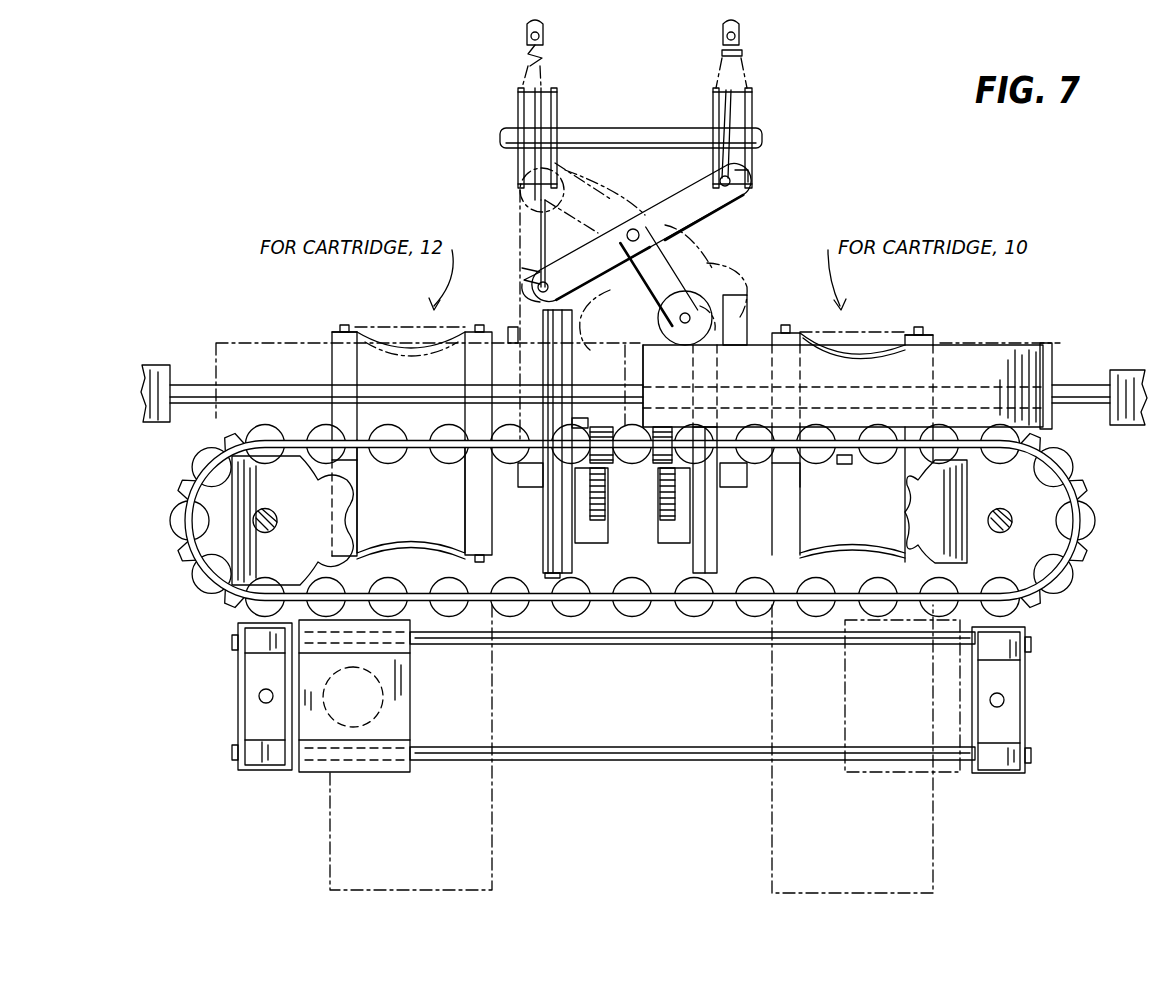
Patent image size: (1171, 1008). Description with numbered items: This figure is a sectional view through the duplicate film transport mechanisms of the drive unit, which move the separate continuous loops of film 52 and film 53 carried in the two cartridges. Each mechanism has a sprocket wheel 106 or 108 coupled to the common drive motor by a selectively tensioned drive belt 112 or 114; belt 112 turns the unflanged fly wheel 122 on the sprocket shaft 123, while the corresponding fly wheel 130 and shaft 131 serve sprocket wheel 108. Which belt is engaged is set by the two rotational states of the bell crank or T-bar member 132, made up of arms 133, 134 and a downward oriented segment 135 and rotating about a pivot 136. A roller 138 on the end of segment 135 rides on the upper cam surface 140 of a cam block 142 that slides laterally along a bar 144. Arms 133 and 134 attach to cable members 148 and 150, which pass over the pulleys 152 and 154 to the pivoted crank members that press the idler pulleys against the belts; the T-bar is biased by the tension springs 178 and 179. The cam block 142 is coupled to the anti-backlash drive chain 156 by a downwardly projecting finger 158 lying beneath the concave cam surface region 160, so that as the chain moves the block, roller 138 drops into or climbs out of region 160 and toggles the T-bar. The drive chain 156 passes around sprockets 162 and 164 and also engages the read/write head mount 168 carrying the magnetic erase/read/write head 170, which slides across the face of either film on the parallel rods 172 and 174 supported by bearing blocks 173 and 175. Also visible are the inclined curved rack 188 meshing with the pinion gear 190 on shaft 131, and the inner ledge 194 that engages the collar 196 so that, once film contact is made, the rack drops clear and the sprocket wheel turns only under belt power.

The film 52 is at (934, 828).
The film 53 is at (494, 830).
The sprocket wheel 106 is at (332, 332).
The sprocket wheel 108 is at (931, 335).
The drive belt 112 is at (548, 516).
The drive belt 114 is at (712, 540).
The fly wheel 122 is at (556, 549).
The sprocket shaft 123 is at (510, 460).
The fly wheel 130 is at (717, 506).
The shaft 131 is at (776, 466).
The T-bar member 132 is at (612, 205).
The arm 133 is at (590, 252).
The arm 134 is at (705, 206).
The downward oriented segment 135 is at (650, 293).
The pivot 136 is at (645, 236).
The roller 138 is at (725, 275).
The upper cam surface 140 is at (965, 345).
The cam block 142 is at (1028, 343).
The bar 144 is at (1083, 385).
The cable member 148 is at (557, 110).
The cable member 150 is at (722, 116).
The pulley 152 is at (518, 107).
The pulley 154 is at (752, 114).
The drive chain 156 is at (430, 448).
The finger 158 is at (843, 464).
The concave cam surface region 160 is at (852, 355).
The sprocket 162 is at (312, 522).
The sprocket 164 is at (920, 512).
The read/write head mount 168 is at (412, 695).
The magnetic erase/read/write head 170 is at (376, 709).
The parallel rod 172 is at (640, 646).
The bearing block 173 is at (240, 702).
The parallel rod 174 is at (668, 762).
The bearing block 175 is at (1030, 692).
The tension spring 178 is at (546, 57).
The tension spring 179 is at (745, 56).
The inclined curved rack 188 is at (660, 522).
The pinion gear 190 is at (658, 468).
The inner ledge 194 is at (660, 495).
The collar 196 is at (692, 348).